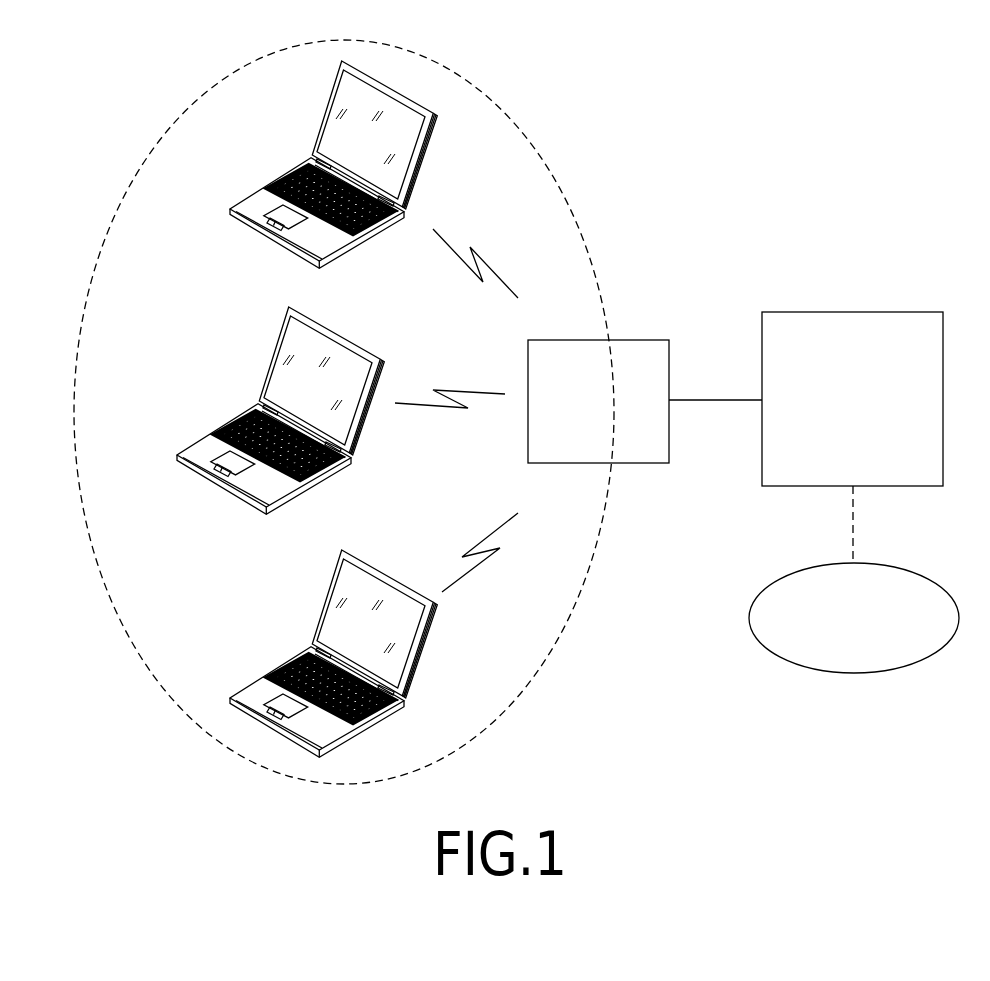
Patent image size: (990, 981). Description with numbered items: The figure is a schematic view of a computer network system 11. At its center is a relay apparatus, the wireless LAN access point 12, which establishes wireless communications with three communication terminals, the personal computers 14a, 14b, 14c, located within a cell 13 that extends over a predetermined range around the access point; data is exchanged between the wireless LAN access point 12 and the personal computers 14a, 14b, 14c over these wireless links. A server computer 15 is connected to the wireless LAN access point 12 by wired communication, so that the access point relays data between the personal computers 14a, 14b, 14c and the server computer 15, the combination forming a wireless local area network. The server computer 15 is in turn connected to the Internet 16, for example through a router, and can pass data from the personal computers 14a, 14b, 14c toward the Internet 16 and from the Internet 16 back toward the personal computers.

The computer network system 11 is at (745, 165).
The wireless LAN access point 12 is at (639, 340).
The cell 13 is at (160, 137).
The personal computer 14a is at (323, 127).
The personal computer 14b is at (270, 365).
The personal computer 14c is at (325, 608).
The server computer 15 is at (920, 310).
The Internet 16 is at (928, 577).